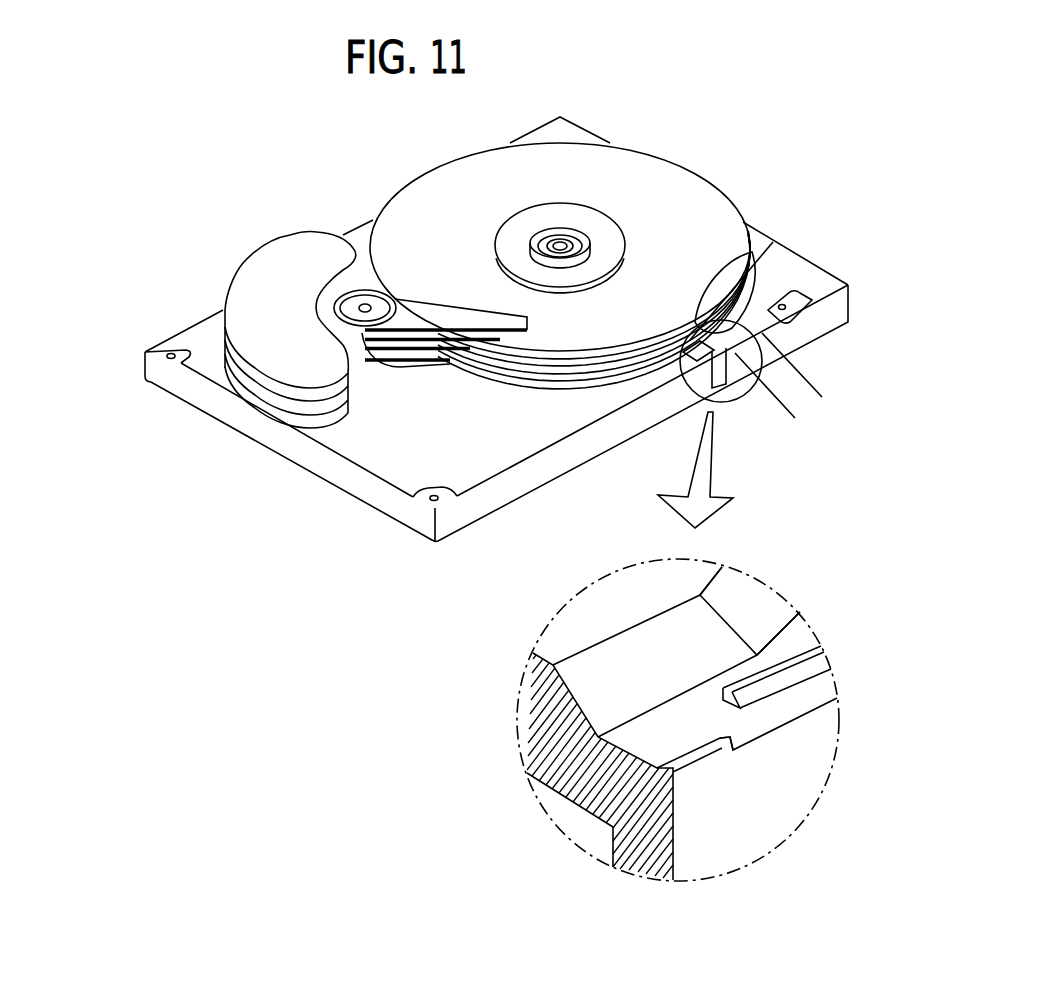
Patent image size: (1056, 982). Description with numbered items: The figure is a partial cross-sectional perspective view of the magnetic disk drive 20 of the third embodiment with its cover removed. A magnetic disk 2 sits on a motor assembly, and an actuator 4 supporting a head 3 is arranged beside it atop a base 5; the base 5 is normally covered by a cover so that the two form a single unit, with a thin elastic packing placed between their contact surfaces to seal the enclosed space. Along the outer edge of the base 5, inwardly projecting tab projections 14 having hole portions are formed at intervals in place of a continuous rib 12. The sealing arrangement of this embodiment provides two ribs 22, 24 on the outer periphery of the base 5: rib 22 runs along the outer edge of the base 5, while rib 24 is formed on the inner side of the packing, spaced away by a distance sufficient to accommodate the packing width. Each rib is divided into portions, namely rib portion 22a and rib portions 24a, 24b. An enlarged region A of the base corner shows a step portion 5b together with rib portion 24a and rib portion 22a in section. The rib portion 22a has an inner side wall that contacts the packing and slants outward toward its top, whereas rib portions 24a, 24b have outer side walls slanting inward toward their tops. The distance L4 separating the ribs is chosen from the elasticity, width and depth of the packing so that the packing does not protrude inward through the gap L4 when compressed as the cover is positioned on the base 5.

The magnetic disk drive 20 is at (88, 188).
The magnetic disk 2 is at (697, 194).
The head 3 is at (506, 333).
The actuator 4 is at (351, 340).
The base 5 is at (291, 452).
The base step portion 5b is at (738, 596).
The rib 12 is at (824, 271).
The tab projections 14 is at (162, 357).
The rib 22 is at (722, 372).
The rib portion 22a is at (720, 745).
The rib 24 is at (984, 282).
The rib portion 24a is at (763, 333).
The rib portion 24b is at (741, 273).
The enlarged portion A is at (773, 242).
The distance L4 is at (776, 404).